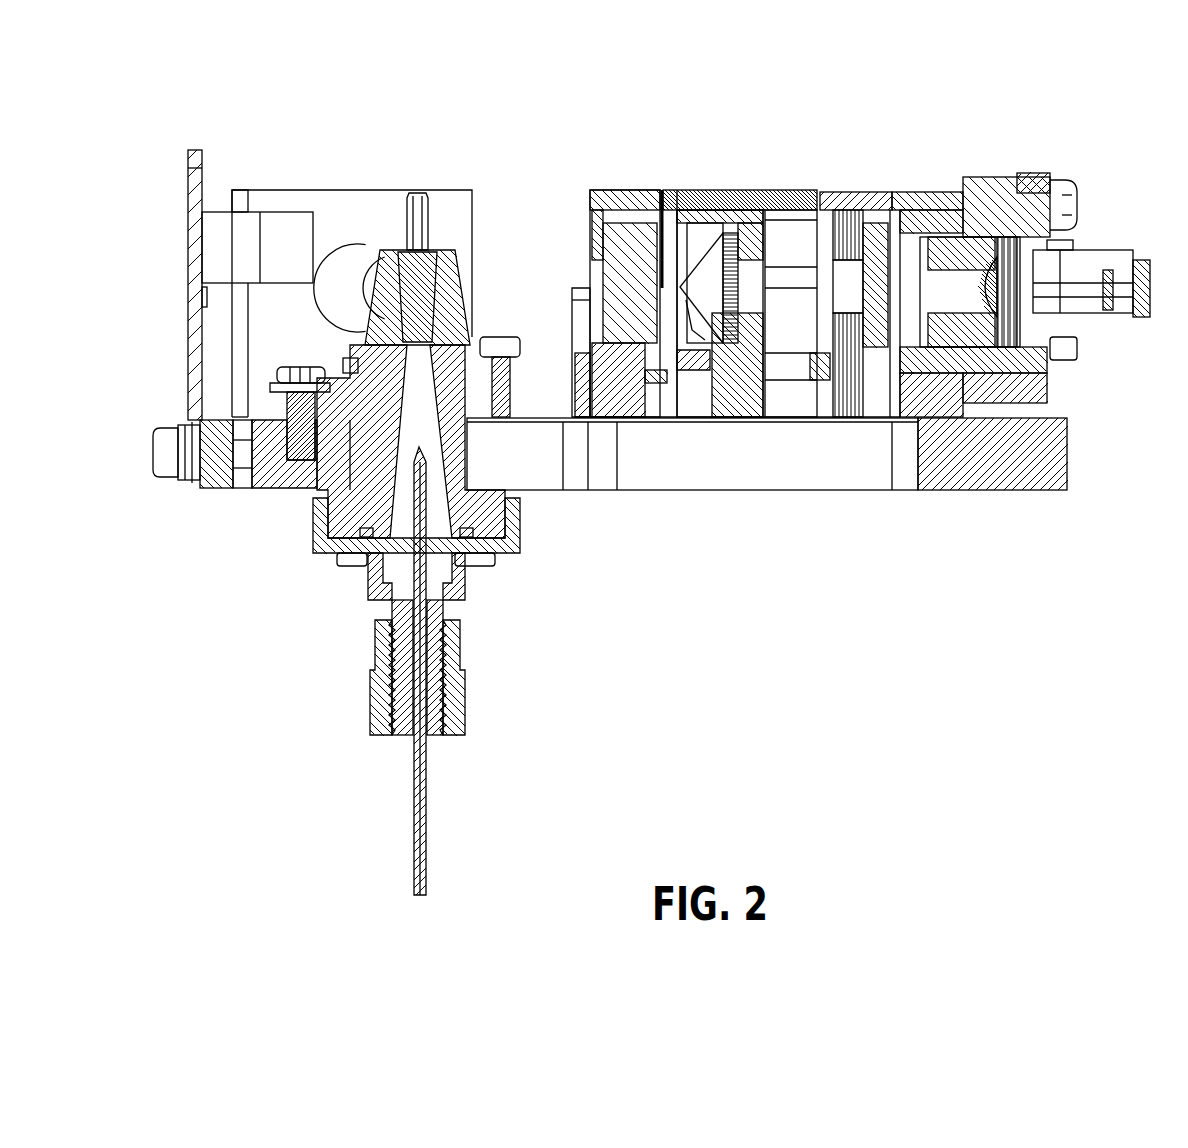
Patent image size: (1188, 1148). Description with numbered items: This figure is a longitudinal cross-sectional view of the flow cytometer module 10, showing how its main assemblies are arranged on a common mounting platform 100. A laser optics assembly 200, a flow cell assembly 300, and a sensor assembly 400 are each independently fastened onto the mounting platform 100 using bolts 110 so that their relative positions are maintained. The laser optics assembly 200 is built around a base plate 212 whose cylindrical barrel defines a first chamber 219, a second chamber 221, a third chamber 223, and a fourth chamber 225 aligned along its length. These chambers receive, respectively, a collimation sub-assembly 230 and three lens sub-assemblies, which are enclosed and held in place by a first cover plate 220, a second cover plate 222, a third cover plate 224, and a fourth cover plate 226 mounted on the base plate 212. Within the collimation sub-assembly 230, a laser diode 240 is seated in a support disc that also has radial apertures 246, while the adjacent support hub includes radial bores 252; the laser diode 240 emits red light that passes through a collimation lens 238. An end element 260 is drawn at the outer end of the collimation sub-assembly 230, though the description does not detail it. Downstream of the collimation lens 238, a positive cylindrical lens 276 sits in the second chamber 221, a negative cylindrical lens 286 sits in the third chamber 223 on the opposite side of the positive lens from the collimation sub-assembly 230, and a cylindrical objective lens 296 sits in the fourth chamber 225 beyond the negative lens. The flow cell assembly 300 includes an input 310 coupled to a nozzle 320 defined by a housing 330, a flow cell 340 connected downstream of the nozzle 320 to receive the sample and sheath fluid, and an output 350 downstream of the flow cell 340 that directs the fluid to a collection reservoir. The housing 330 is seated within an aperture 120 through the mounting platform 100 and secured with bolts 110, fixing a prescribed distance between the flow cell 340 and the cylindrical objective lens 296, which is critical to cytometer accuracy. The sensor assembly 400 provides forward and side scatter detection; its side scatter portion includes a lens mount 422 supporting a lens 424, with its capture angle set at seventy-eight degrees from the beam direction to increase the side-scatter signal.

The module 10 is at (557, 135).
The mounting platform 100 is at (982, 477).
The bolts 110 is at (290, 370).
The aperture 120 is at (468, 455).
The laser optics assembly 200 is at (839, 170).
The base plate 212 is at (960, 398).
The first chamber 219 is at (943, 390).
The cover plate 220 is at (905, 260).
The second chamber 221 is at (880, 340).
The second cover plate 222 is at (862, 193).
The third chamber 223 is at (703, 333).
The third cover plate 224 is at (712, 267).
The fourth chamber 225 is at (643, 337).
The fourth cover plate 226 is at (620, 193).
The collimation sub-assembly 230 is at (1063, 380).
The collimation lens 238 is at (1050, 320).
The laser diode 240 is at (1057, 273).
The radial apertures 246 is at (1027, 200).
The radial bores 252 is at (980, 230).
The end cap 260 is at (1070, 192).
The positive cylindrical lens 276 is at (877, 270).
The negative cylindrical lens 286 is at (710, 277).
The cylindrical objective lens 296 is at (635, 267).
The flow cell assembly 300 is at (474, 693).
The input 310 is at (345, 671).
The nozzle 320 is at (395, 500).
The housing 330 is at (493, 523).
The flow cell 340 is at (432, 285).
The output 350 is at (421, 185).
The sensor assembly 400 is at (226, 170).
The lens mount 422 is at (343, 262).
The lens 424 is at (368, 255).